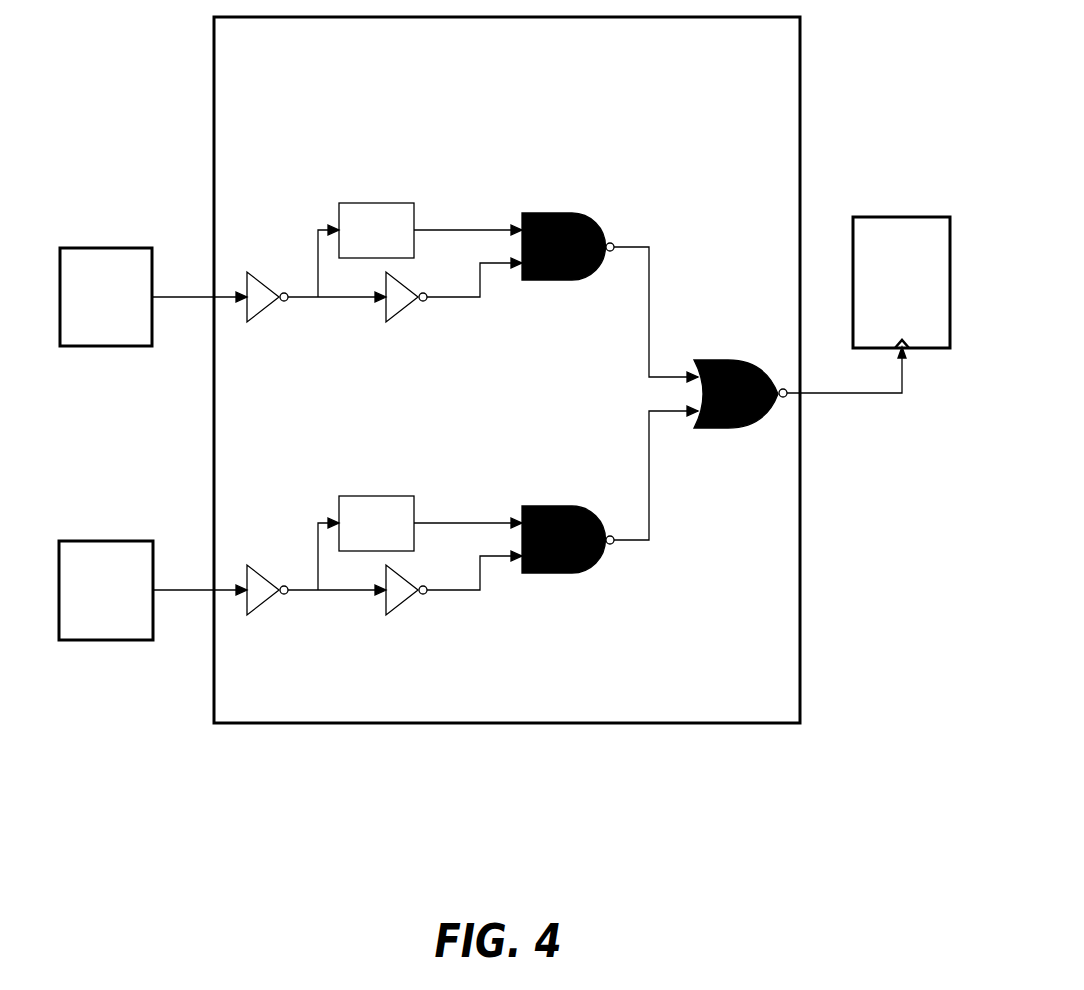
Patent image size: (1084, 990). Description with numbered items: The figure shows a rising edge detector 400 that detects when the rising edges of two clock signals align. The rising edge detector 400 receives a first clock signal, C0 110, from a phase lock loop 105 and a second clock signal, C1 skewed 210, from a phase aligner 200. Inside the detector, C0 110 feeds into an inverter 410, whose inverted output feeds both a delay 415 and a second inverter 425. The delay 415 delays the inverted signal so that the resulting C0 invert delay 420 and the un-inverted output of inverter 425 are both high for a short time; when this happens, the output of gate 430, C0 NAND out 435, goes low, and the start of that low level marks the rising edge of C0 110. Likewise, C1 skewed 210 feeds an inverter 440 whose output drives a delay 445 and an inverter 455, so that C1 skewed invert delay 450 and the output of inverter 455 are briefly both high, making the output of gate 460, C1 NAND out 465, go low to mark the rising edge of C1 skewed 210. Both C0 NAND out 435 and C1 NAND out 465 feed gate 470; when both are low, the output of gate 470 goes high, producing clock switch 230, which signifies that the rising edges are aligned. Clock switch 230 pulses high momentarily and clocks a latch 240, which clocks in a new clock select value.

The rising edge detector 400 is at (492, 75).
The phase lock loop 105 is at (91, 320).
The C0 110 is at (182, 241).
The phase aligner 200 is at (91, 623).
The C1 skewed 210 is at (154, 663).
The inverter 410 is at (311, 329).
The delay 415 is at (363, 250).
The C0 invert delay 420 is at (412, 177).
The inverter 425 is at (448, 325).
The gate 430 is at (577, 287).
The C0 NAND out 435 is at (686, 256).
The inverter 440 is at (311, 627).
The delay 445 is at (363, 543).
The C1 skewed invert delay 450 is at (378, 483).
The inverter 455 is at (448, 618).
The gate 460 is at (577, 580).
The C1 NAND out 465 is at (686, 518).
The gate 470 is at (740, 366).
The latch 240 is at (887, 325).
The clock switch 230 is at (860, 446).